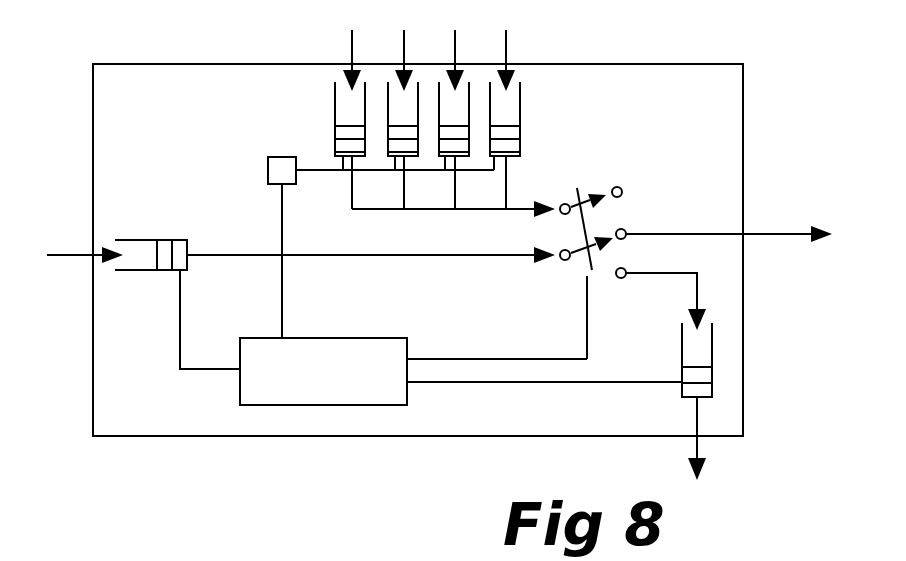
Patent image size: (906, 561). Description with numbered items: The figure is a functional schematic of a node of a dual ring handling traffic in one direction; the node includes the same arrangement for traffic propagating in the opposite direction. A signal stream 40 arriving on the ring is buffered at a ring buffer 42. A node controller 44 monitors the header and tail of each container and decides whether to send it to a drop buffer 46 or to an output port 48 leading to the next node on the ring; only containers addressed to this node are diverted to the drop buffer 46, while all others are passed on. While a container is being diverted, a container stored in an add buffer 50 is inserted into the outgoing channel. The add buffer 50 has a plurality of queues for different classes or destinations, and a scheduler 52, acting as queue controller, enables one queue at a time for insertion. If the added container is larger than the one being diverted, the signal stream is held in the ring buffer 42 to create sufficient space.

The signal stream 40 is at (65, 257).
The ring buffer 42 is at (143, 242).
The node controller 44 is at (322, 415).
The drop buffer 46 is at (712, 352).
The output port 48 is at (777, 231).
The add buffer 50 is at (520, 117).
The scheduler 52 is at (277, 157).